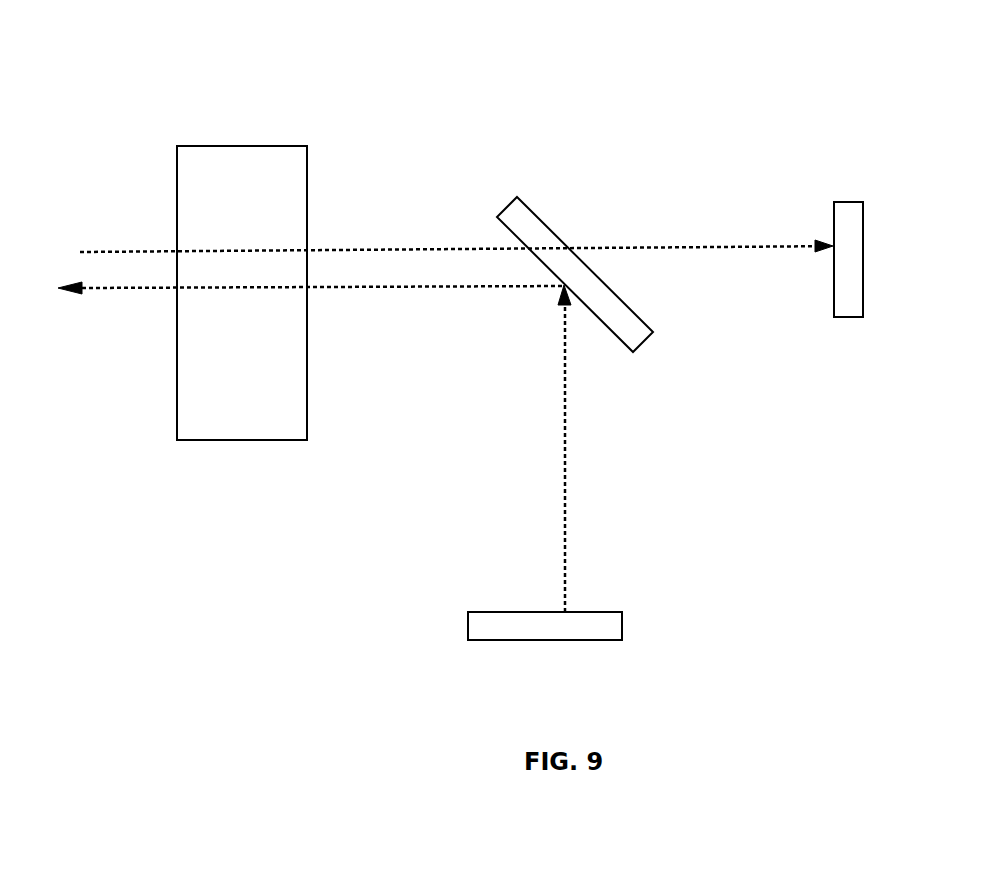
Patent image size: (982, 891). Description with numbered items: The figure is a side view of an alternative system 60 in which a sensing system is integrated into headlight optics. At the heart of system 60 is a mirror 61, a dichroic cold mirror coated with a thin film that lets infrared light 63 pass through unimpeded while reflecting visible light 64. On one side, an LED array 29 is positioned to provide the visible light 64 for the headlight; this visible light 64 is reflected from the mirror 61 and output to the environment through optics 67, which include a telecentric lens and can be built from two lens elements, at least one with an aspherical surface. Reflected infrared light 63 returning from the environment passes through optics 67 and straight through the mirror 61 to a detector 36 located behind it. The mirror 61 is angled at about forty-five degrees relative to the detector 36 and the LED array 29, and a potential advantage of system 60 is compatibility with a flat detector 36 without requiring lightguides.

The system 60 is at (470, 88).
The optics 67 is at (303, 362).
The mirror 61 is at (542, 222).
The infrared light 63 is at (743, 246).
The detector 36 is at (850, 318).
The visible light 64 is at (568, 466).
The LED array 29 is at (622, 628).